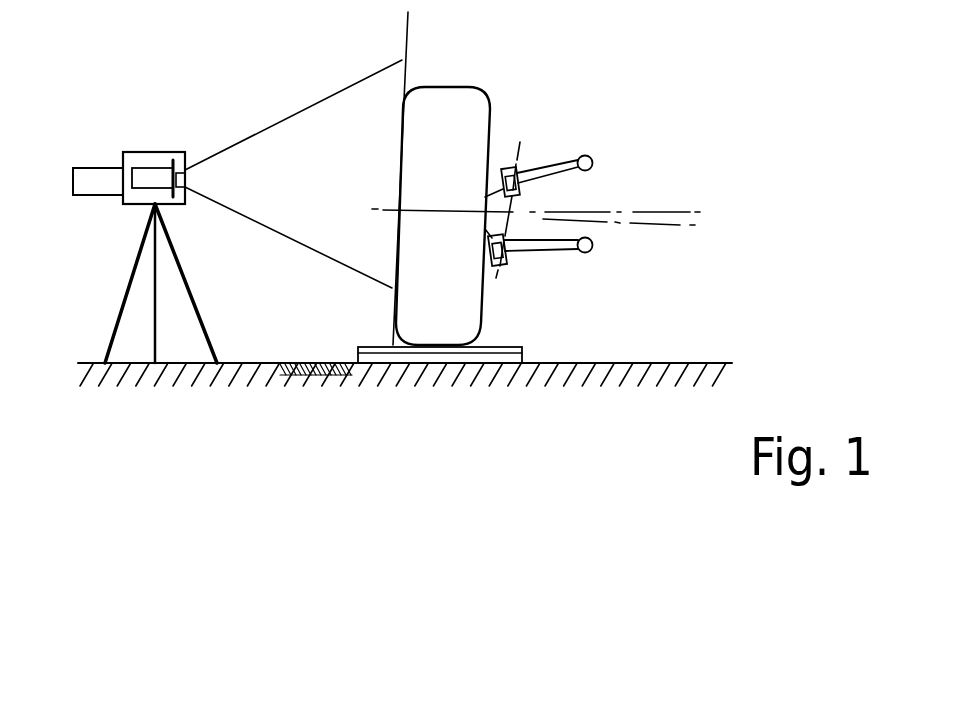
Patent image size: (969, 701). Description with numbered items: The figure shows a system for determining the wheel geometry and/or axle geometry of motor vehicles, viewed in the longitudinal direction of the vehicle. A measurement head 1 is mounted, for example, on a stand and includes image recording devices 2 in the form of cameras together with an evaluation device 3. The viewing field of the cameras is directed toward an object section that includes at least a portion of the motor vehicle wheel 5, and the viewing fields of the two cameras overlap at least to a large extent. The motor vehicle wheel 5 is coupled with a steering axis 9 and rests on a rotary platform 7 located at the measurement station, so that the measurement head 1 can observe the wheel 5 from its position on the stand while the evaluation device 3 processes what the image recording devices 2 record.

The measurement head 1 is at (122, 162).
The image recording device 2 is at (146, 168).
The evaluation device 3 is at (76, 187).
The motor vehicle wheel 5 is at (461, 105).
The rotary platform 7 is at (522, 347).
The steering axis 9 is at (515, 157).